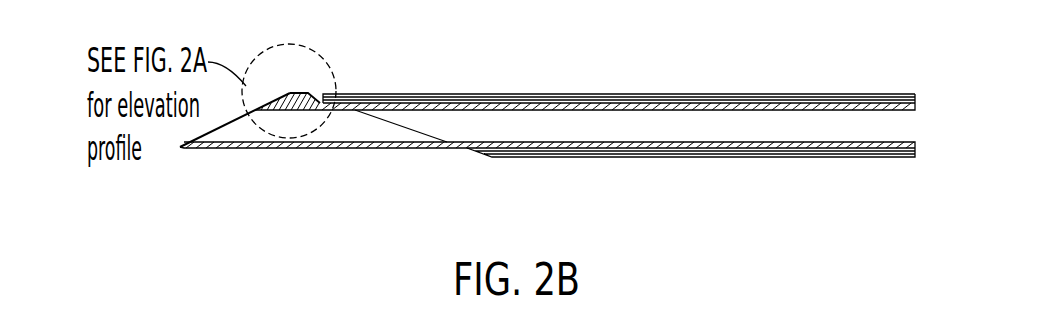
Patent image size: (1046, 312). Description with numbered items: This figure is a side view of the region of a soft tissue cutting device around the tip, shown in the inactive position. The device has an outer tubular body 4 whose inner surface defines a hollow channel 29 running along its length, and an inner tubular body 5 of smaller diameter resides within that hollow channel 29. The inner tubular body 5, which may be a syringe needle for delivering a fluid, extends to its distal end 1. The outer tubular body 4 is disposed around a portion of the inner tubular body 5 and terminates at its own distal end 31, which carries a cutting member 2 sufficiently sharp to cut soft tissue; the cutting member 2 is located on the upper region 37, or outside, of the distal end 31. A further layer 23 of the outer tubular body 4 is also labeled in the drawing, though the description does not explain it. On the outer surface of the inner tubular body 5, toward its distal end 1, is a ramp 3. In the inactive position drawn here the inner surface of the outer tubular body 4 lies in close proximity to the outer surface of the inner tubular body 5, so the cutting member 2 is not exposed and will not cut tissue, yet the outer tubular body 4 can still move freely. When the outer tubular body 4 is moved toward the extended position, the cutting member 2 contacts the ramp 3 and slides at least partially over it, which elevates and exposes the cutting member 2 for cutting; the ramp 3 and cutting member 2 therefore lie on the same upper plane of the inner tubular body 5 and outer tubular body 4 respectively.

The distal end 1 is at (205, 148).
The cutting member 2 is at (348, 93).
The ramp 3 is at (295, 93).
The outer tubular body 4 is at (692, 93).
The inner tubular body 5 is at (430, 148).
The adhesive layer 23 is at (590, 98).
The hollow channel 29 is at (643, 143).
The distal end 31 is at (380, 120).
The upper region 37 is at (455, 98).